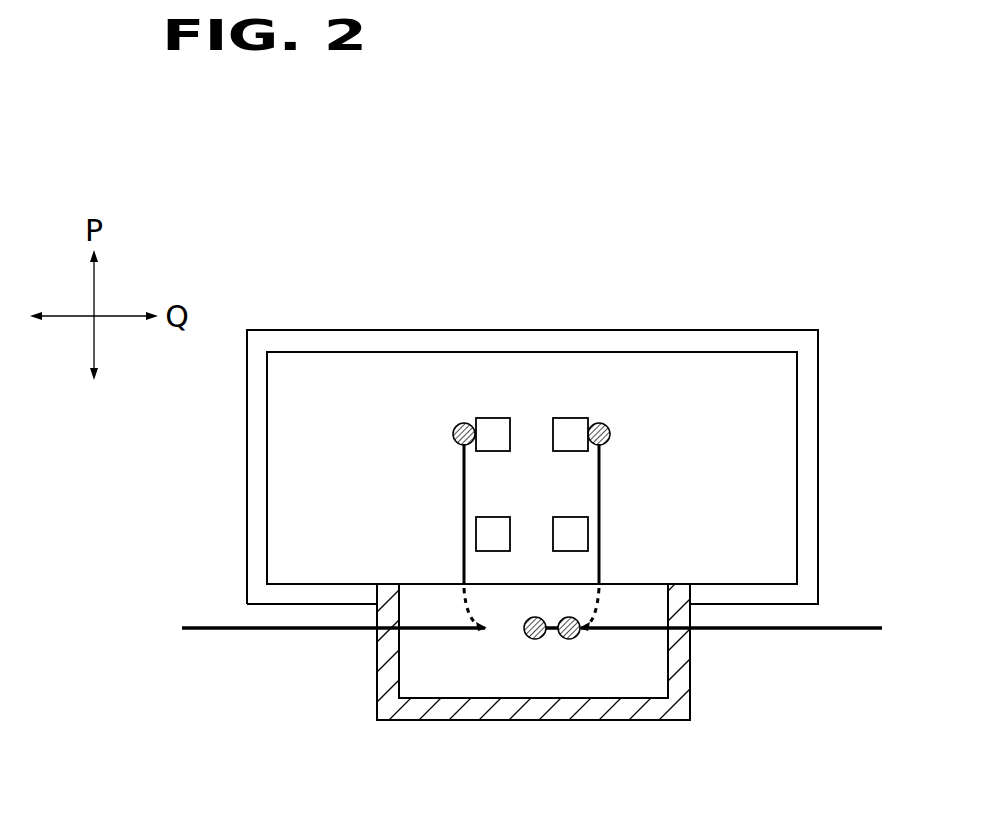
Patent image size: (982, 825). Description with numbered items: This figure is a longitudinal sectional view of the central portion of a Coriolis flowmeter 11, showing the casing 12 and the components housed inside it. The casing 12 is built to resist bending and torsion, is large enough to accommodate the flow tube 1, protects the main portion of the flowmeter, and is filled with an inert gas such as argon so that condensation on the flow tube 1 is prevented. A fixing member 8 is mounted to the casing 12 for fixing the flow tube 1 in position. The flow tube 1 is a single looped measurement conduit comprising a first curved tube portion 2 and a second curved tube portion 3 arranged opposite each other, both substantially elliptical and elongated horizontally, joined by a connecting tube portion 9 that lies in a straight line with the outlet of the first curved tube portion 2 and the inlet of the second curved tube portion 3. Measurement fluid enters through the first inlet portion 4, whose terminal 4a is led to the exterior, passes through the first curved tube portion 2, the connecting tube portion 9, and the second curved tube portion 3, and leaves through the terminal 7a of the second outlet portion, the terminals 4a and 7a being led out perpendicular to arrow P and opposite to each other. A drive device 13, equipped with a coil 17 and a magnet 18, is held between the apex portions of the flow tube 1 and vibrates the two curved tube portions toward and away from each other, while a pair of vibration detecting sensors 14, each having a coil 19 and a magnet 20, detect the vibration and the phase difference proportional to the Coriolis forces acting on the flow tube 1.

The flow tube 1 is at (606, 488).
The first curved tube portion 2 is at (600, 422).
The second curved tube portion 3 is at (464, 422).
The first inlet portion 4 is at (566, 640).
The terminal of the first inlet portion 4a is at (825, 631).
The terminal of the second outlet portion 7a is at (303, 631).
The fixing member 8 is at (635, 710).
The connecting tube portion 9 is at (531, 640).
The Coriolis flowmeter 11 is at (689, 306).
The casing 12 is at (752, 339).
The drive device 13 is at (482, 256).
The vibration detecting sensor 14 is at (172, 463).
The coil 17 is at (494, 430).
The magnet 18 is at (570, 430).
The coil 19 is at (572, 529).
The magnet 20 is at (492, 535).